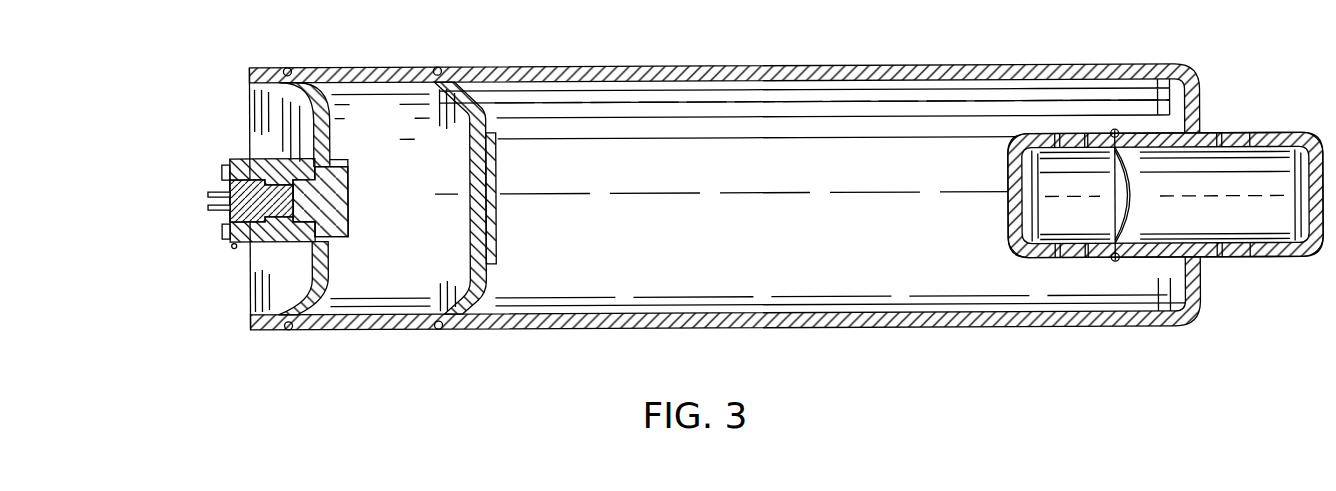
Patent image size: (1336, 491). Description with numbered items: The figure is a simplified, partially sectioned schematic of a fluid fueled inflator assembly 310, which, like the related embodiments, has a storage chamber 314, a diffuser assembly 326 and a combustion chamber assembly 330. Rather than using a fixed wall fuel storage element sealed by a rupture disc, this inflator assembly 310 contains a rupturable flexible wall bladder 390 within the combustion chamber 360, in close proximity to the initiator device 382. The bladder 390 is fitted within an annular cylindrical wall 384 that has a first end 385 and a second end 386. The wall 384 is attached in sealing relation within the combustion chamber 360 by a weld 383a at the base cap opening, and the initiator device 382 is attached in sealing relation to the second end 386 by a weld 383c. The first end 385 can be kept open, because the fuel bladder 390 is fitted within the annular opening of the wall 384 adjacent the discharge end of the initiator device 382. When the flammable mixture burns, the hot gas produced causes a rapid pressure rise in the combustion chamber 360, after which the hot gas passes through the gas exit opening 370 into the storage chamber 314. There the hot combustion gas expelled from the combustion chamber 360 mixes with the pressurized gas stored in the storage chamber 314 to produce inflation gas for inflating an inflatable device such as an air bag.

The fluid fueled inflator assembly 310 is at (1003, 59).
The storage chamber 314 is at (601, 115).
The diffuser assembly 326 is at (1302, 126).
The combustion chamber assembly 330 is at (361, 60).
The combustion chamber 360 is at (381, 278).
The gas exit opening 370 is at (478, 187).
The initiator device 382 is at (226, 184).
The weld 383a is at (310, 147).
The weld 383c is at (228, 243).
The annular cylindrical wall 384 is at (246, 157).
The first end 385 is at (351, 158).
The second end 386 is at (230, 246).
The rupturable flexible wall bladder 390 is at (349, 204).